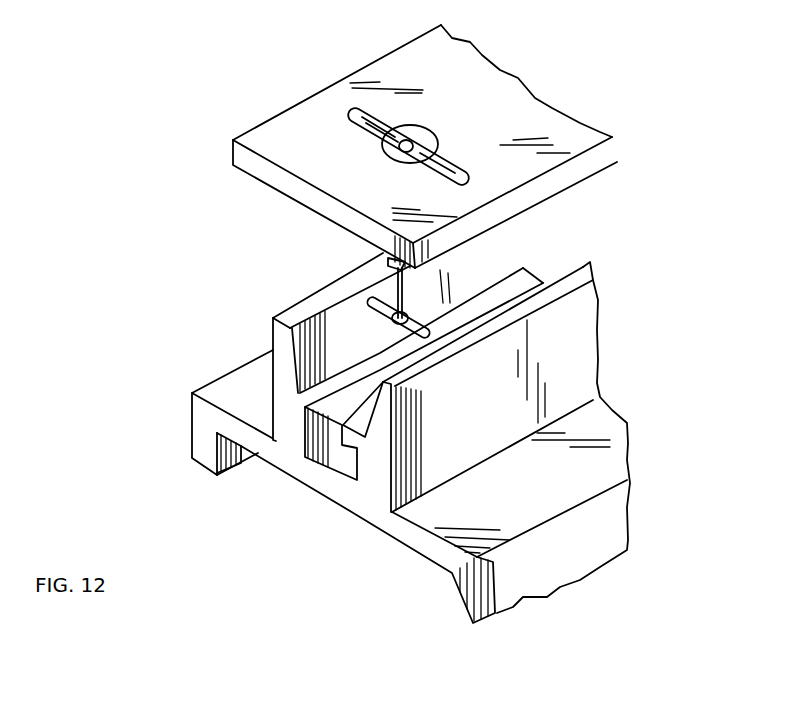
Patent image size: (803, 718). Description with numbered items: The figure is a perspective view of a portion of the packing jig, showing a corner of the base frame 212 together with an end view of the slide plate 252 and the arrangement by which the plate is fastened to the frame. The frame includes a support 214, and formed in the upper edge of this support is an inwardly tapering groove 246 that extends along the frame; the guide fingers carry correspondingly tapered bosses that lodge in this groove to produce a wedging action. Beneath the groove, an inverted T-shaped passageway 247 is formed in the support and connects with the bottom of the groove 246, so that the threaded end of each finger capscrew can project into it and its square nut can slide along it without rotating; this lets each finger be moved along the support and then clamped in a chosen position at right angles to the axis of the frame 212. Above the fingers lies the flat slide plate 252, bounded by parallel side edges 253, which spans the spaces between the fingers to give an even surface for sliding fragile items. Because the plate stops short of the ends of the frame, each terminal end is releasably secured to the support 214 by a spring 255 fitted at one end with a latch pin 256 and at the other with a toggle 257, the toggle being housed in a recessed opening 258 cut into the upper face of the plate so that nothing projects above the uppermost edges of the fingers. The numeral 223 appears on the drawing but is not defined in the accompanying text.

The base frame 212 is at (400, 466).
The support 214 is at (283, 338).
The base member 223 is at (200, 382).
The inwardly tapering groove 246 is at (300, 390).
The inverted T-shaped passageway 247 is at (332, 462).
The slide plate 252 is at (436, 134).
The side edges 253 is at (303, 100).
The spring 255 is at (388, 262).
The latch pin 256 is at (390, 320).
The toggle 257 is at (467, 175).
The recessed opening 258 is at (418, 138).